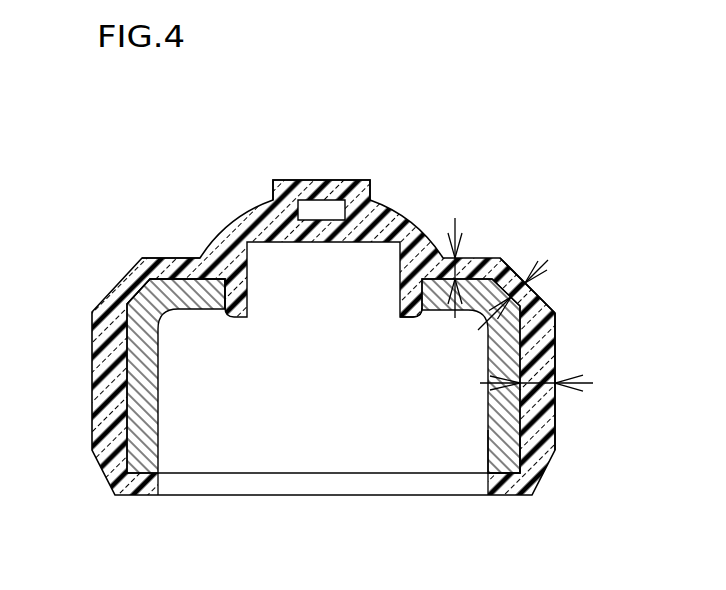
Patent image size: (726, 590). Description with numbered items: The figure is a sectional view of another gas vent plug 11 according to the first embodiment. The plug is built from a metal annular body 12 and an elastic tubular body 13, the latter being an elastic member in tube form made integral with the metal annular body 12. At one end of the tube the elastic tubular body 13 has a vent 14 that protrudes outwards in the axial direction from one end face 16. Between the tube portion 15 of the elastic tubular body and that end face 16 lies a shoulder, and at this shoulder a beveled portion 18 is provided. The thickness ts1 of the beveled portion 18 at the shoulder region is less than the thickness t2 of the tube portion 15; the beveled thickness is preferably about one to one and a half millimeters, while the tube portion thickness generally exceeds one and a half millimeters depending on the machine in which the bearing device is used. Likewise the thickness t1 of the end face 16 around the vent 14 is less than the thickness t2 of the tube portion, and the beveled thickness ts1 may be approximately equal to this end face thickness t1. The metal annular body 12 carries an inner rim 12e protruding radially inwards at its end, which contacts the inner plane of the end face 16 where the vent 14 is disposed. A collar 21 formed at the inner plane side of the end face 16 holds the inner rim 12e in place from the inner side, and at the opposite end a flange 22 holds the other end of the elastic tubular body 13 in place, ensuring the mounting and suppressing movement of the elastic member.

The cap 11 is at (431, 166).
The metal annular body 12 is at (143, 421).
The inner rim 12e is at (195, 297).
The elastic tubular body 13 is at (110, 359).
The vent 14 is at (345, 178).
The tube portion 15 is at (600, 313).
The one end face 16 is at (143, 245).
The beveled portion 18 is at (553, 287).
The collar 21 is at (430, 313).
The flange 22 is at (507, 473).
The thickness of one end face t1 is at (457, 282).
The thickness of beveled portion ts1 is at (514, 273).
The thickness of tube portion t2 is at (537, 390).